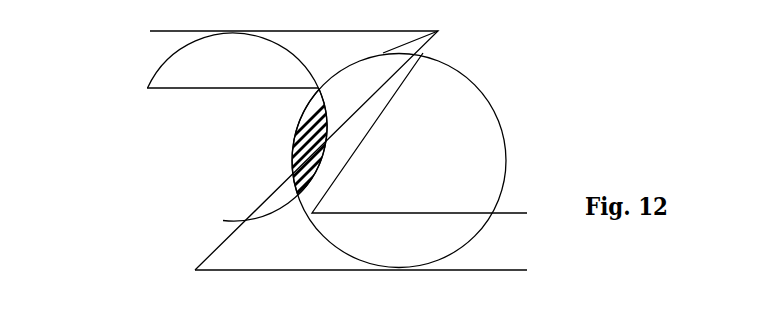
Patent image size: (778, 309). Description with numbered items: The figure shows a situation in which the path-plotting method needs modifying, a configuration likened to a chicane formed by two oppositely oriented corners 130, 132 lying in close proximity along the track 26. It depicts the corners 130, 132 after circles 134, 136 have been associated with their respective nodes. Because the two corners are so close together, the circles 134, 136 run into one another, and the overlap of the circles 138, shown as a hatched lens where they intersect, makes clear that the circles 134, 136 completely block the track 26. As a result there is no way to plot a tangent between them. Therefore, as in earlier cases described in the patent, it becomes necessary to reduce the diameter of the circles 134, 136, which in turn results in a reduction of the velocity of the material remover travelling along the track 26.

The track 26 is at (517, 243).
The corner 130 is at (448, 65).
The corner 132 is at (178, 264).
The circle 134 is at (470, 241).
The circle 136 is at (152, 85).
The overlap of the circles 138 is at (293, 143).